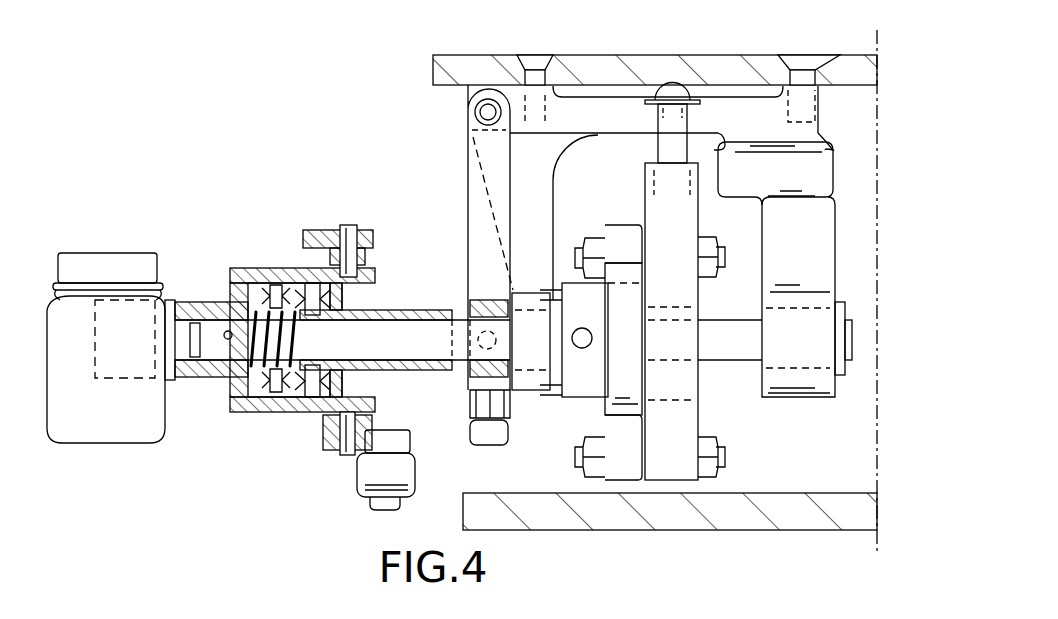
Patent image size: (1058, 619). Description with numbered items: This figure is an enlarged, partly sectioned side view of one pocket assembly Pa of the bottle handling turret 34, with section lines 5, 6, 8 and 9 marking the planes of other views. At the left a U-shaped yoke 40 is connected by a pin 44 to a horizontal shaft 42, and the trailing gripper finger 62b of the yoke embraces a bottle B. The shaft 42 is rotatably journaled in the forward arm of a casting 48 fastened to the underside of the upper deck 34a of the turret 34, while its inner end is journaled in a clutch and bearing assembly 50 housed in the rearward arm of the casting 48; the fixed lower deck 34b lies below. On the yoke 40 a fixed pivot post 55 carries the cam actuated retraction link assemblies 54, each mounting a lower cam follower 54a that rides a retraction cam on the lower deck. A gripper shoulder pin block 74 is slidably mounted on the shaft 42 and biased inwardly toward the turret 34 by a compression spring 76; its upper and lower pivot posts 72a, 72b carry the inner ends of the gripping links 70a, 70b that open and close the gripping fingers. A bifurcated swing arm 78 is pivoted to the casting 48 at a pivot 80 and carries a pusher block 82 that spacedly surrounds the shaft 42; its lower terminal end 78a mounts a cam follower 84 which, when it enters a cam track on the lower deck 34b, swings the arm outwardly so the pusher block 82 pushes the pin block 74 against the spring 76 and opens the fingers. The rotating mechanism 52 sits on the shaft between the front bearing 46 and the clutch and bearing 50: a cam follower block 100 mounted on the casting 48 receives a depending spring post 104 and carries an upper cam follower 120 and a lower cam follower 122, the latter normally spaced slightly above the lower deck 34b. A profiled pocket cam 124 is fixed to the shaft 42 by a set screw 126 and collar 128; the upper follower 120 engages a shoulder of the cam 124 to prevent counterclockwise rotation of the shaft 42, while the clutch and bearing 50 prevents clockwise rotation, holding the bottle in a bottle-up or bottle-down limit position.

The turret 34 is at (458, 55).
The upper deck 34a is at (848, 58).
The lower deck 34b is at (818, 493).
The casting 48 is at (735, 100).
The gripper shoulder pin block 74 is at (465, 300).
The pivot 80 is at (473, 115).
The bifurcated swing arm 78 is at (478, 176).
The lower terminal end 78a is at (468, 400).
The cam follower block 100 is at (694, 212).
The clutch and bearing assembly 50 is at (790, 397).
The spring post 104 is at (665, 142).
The mechanism for rotating the pocket assemblies 52 is at (636, 194).
The upper cam follower 120 is at (612, 236).
The lower cam follower 122 is at (650, 447).
The profiled pocket cam 124 is at (628, 302).
The set screw 126 is at (592, 338).
The collar 128 is at (580, 400).
The front bearing 46 is at (533, 390).
The shaft 42 is at (398, 330).
The pusher block 82 is at (468, 378).
The cam follower 84 is at (488, 445).
The yoke 40 is at (245, 268).
The pin 44 is at (226, 340).
The compression spring 76 is at (285, 340).
The gripping link 70a is at (322, 300).
The gripping link 70b is at (322, 384).
The upper pivot post 72a is at (310, 290).
The lower pivot post 72b is at (312, 400).
The fixed pivot post 55 is at (348, 228).
The retraction link assembly 54 is at (370, 258).
The cam follower 54a is at (358, 485).
The pocket assembly Pa is at (322, 224).
The bottle B is at (118, 435).
The trailing gripper finger 62b is at (155, 378).
The section line 5 is at (582, 66).
The section line 6 is at (648, 66).
The section line 8 is at (45, 246).
The section line 9 is at (47, 85).